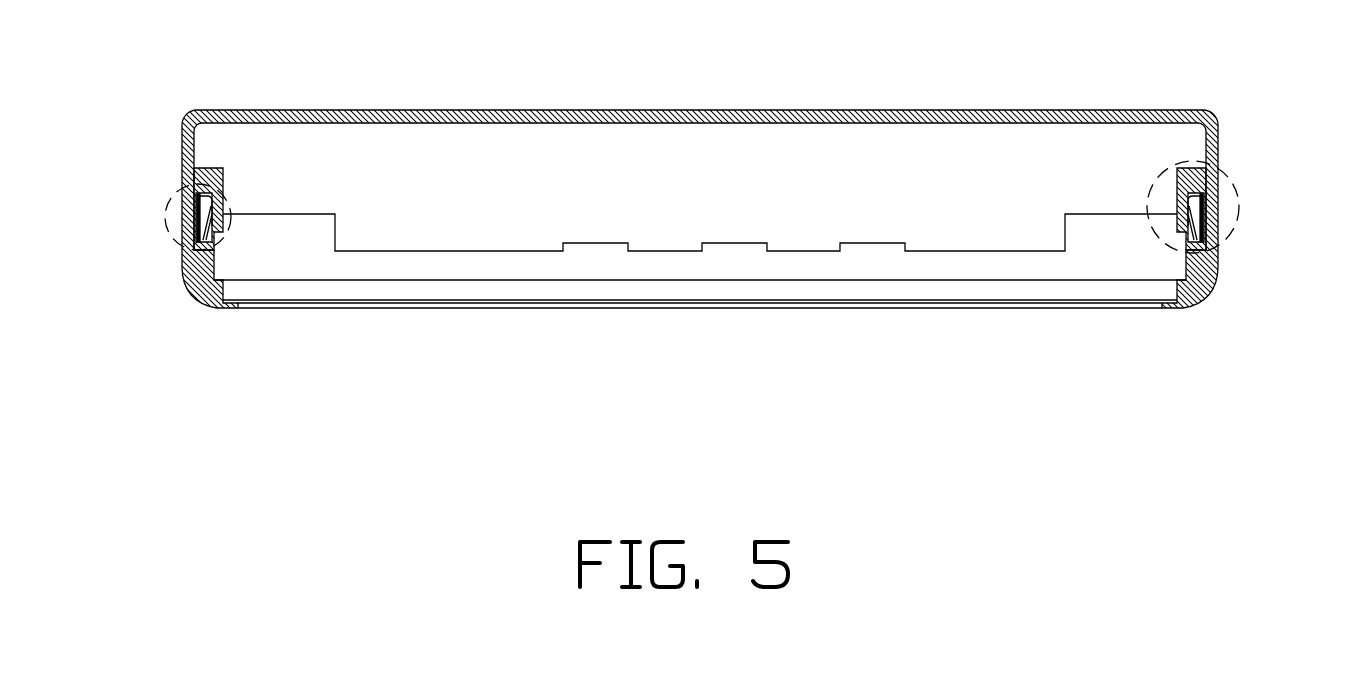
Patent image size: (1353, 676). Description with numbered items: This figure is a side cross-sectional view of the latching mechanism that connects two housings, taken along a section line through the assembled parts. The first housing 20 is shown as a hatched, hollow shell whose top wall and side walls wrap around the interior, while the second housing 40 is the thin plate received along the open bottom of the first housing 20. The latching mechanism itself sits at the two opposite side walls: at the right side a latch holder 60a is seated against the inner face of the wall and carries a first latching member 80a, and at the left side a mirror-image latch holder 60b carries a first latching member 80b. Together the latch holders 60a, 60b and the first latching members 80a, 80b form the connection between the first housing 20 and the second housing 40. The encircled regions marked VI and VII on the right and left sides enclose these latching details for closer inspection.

The first housing 20 is at (587, 111).
The second housing 40 is at (1197, 290).
The latch holder 60a is at (1188, 167).
The latch holder 60b is at (182, 178).
The first latching member 80a is at (1220, 223).
The first latching member 80b is at (180, 203).
The detail view VI indicator VI is at (1238, 200).
The detail view VII indicator VII is at (173, 237).